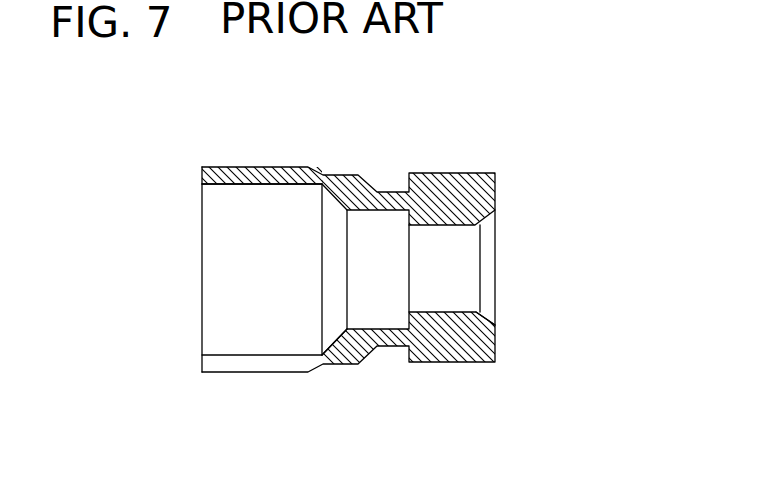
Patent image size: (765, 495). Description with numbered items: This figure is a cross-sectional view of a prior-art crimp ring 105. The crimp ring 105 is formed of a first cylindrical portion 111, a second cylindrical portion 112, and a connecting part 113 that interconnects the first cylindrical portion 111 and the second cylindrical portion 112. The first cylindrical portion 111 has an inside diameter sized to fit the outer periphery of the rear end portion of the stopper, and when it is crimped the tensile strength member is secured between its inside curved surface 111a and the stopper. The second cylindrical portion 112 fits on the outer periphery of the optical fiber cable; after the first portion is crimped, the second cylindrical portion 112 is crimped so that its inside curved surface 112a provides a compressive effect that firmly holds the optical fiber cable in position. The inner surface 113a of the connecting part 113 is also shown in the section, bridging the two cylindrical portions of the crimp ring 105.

The crimp ring 105 is at (403, 142).
The first cylindrical portion 111 is at (272, 167).
The inside curved surface 111a is at (238, 185).
The second cylindrical portion 112 is at (475, 363).
The inside curved surface 112a is at (473, 312).
The connecting part 113 is at (335, 364).
The tapered inner surface 113a is at (341, 334).